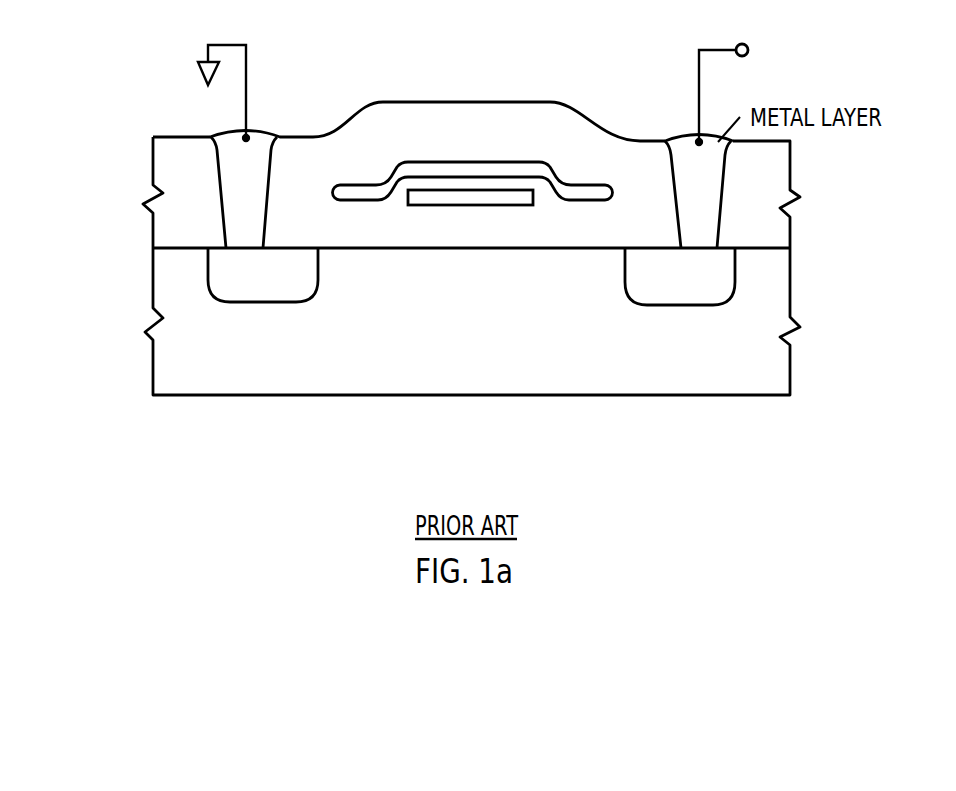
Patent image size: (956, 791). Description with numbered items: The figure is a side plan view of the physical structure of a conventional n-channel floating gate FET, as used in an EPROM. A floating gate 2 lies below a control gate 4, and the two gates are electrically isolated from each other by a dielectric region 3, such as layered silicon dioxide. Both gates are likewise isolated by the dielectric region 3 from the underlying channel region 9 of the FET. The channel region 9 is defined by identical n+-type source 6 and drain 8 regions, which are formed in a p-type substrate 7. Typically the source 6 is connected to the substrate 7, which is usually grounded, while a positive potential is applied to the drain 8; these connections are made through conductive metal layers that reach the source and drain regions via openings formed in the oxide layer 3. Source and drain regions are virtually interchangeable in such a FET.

The floating gate 2 is at (492, 177).
The dielectric region 3 is at (405, 117).
The control gate 4 is at (448, 149).
The source region 6 is at (196, 281).
The substrate 7 is at (248, 385).
The drain region 8 is at (747, 286).
The channel region 9 is at (418, 277).